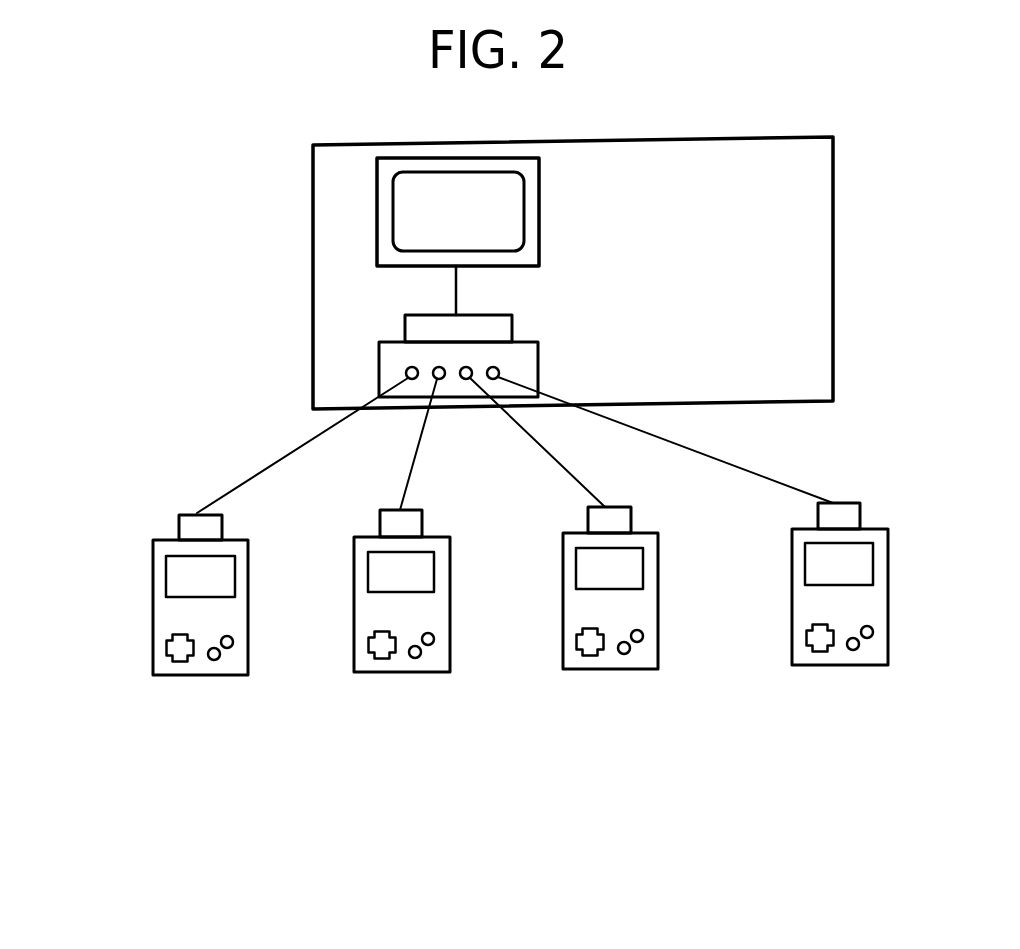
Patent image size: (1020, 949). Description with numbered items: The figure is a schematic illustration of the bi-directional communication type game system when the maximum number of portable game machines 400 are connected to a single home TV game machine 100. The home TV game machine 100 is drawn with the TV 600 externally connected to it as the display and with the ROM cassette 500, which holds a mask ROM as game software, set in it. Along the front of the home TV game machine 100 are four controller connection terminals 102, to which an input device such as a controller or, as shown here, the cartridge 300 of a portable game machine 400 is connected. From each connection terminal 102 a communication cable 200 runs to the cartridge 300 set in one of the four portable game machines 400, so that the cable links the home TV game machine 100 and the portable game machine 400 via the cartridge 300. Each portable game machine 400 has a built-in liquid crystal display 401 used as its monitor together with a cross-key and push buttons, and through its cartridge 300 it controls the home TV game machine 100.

The home TV game machine 100 is at (523, 352).
The controller connection terminal 102 is at (407, 380).
The communication cable 200 is at (300, 440).
The cartridge 300 is at (187, 532).
The portable game machine 400 is at (803, 640).
The liquid crystal display 401 is at (172, 590).
The ROM cassette 500 is at (420, 322).
The TV 600 is at (524, 207).